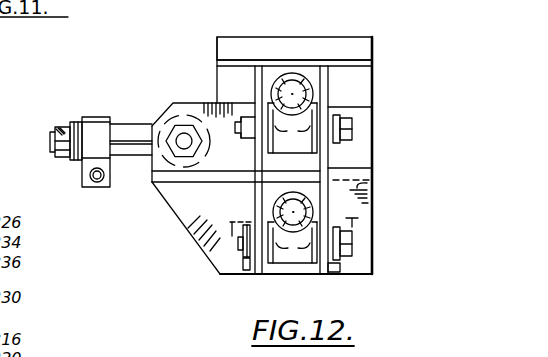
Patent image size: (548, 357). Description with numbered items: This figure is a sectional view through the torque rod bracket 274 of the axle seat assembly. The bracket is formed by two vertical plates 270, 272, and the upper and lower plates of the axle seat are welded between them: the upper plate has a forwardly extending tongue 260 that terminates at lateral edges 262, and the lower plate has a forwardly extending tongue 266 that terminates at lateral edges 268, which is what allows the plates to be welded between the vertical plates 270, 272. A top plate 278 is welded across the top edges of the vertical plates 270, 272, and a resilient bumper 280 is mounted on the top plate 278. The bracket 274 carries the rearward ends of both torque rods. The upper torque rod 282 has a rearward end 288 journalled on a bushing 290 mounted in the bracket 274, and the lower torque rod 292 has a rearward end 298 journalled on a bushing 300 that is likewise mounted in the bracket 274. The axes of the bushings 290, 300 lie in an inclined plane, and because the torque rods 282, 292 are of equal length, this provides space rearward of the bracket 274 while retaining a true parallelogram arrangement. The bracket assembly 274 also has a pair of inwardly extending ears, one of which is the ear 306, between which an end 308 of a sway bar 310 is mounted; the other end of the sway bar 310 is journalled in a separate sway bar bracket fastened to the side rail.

The tongue 260 is at (310, 178).
The lateral edges 262 is at (368, 184).
The tongue 266 is at (353, 220).
The lateral edges 268 is at (229, 239).
The vertical plate 270 is at (261, 191).
The vertical plate 272 is at (326, 162).
The torque rod bracket 274 is at (373, 275).
The top plate 278 is at (340, 60).
The resilient bumper 280 is at (292, 46).
The upper torque rod 282 is at (313, 92).
The rearward end 288 is at (308, 137).
The bushing 290 is at (352, 125).
The lower torque rod 292 is at (296, 233).
The rearward end 298 is at (312, 265).
The bushing 300 is at (352, 249).
The ear 306 is at (190, 104).
The end 308 is at (166, 116).
The sway bar 310 is at (60, 158).